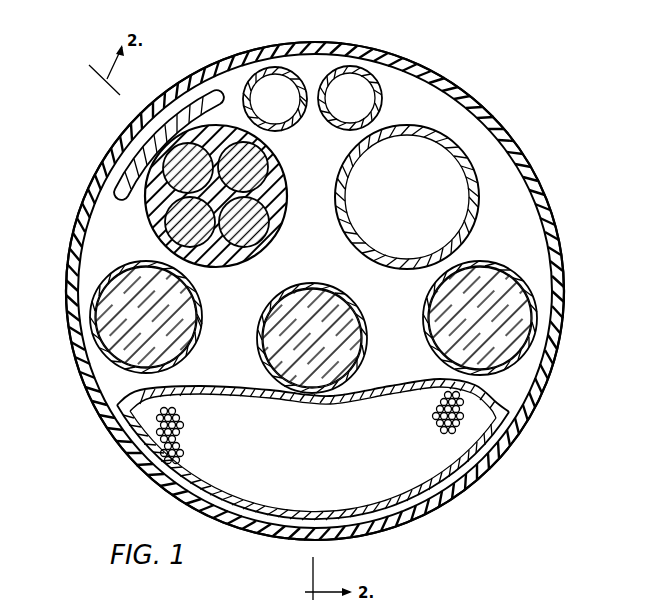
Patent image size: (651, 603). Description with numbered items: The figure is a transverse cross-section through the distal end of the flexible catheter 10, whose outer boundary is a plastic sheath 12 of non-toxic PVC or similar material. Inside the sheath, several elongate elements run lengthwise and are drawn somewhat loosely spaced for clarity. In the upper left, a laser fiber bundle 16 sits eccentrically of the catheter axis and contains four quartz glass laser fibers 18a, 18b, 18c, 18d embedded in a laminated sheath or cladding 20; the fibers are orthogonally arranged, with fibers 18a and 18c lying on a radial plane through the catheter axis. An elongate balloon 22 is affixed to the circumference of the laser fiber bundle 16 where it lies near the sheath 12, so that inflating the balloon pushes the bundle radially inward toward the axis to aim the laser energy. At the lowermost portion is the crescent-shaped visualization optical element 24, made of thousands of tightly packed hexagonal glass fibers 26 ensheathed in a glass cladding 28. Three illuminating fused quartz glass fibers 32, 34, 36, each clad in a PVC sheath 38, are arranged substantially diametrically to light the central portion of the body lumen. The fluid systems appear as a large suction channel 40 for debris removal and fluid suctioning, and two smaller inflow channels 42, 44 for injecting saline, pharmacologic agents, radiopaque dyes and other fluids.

The flexible catheter 10 is at (523, 100).
The plastic sheath 12 is at (560, 290).
The laser fiber bundle 16 is at (146, 202).
The laser fiber 18a is at (170, 205).
The laser fiber 18b is at (262, 163).
The laser fiber 18c is at (258, 236).
The laser fiber 18d is at (207, 250).
The laminated sheath or cladding 20 is at (272, 192).
The elongate balloon 22 is at (197, 100).
The visualization optical element 24 is at (500, 396).
The glass fibers 26 is at (182, 432).
The glass cladding 28 is at (478, 483).
The fused quartz glass fiber 32 is at (178, 335).
The fused quartz glass fiber 34 is at (350, 343).
The fused quartz glass fiber 36 is at (440, 300).
The PVC sheath 38 is at (92, 322).
The suction channel 40 is at (472, 210).
The inflow channel 42 is at (354, 66).
The inflow channel 44 is at (277, 67).